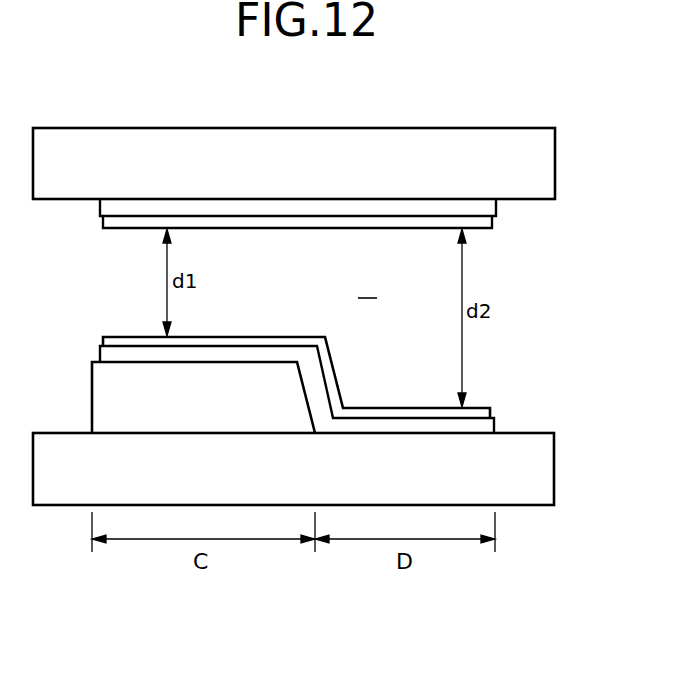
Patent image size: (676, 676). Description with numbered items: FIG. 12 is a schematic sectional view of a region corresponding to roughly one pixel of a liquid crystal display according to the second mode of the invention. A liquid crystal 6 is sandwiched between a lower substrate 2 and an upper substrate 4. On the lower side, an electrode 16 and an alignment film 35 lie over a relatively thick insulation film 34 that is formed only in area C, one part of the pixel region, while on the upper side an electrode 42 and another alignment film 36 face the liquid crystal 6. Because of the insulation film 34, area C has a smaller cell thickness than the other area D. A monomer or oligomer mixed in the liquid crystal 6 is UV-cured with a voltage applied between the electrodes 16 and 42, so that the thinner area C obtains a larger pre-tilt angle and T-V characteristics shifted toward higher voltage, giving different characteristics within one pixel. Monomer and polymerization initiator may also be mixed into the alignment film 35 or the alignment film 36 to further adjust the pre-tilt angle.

The substrate 2 is at (543, 470).
The counter substrate 4 is at (543, 160).
The liquid crystal 6 is at (367, 284).
The electrode 16 is at (494, 428).
The insulation film 34 is at (105, 394).
The alignment film 35 is at (490, 410).
The alignment film 36 is at (492, 227).
The electrode 42 is at (497, 207).